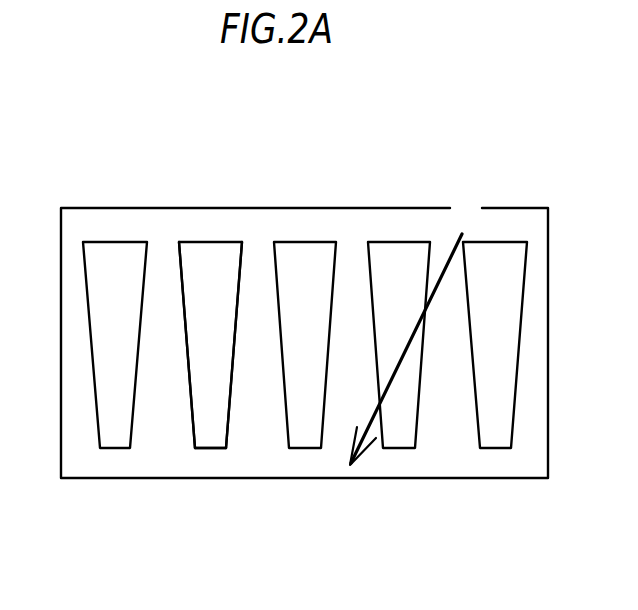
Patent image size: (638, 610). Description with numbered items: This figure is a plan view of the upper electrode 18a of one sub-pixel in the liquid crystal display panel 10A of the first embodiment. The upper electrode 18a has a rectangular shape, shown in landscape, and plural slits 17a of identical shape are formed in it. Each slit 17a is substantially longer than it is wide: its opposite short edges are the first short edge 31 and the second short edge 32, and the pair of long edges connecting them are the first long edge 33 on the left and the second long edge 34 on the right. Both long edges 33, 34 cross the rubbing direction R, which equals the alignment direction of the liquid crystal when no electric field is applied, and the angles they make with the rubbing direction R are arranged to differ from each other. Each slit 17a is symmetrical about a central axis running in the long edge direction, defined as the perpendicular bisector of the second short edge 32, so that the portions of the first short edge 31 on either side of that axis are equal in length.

The liquid crystal display panel 10A is at (83, 104).
The slit 17a is at (113, 285).
The upper electrode 18a is at (335, 222).
The first short edge 31 is at (207, 242).
The second short edge 32 is at (208, 450).
The first long edge 33 is at (187, 356).
The second long edge 34 is at (233, 360).
The rubbing direction R is at (410, 335).